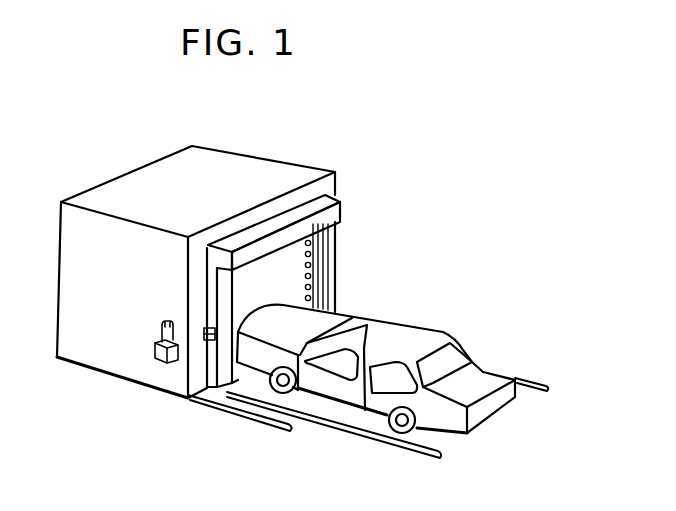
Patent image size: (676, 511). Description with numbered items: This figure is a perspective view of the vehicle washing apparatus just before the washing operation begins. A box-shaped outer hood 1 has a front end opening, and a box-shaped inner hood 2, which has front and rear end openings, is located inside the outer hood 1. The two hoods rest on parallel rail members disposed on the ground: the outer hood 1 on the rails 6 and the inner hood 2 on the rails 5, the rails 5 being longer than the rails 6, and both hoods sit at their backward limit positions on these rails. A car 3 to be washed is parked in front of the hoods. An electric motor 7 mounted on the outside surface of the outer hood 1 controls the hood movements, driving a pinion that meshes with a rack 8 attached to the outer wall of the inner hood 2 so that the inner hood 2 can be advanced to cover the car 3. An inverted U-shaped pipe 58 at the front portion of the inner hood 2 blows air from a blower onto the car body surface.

The outer hood 1 is at (216, 164).
The inner hood 2 is at (320, 210).
The inverted U-shaped pipe 58 is at (316, 260).
The car 3 is at (483, 378).
The rail members 5 is at (538, 392).
The rail members 6 is at (275, 429).
The electric motor 7 is at (155, 355).
The rack 8 is at (212, 339).